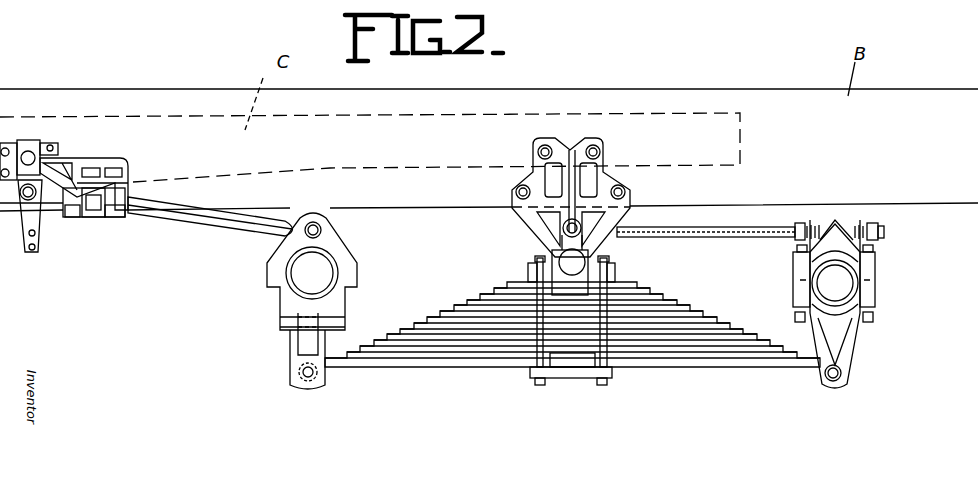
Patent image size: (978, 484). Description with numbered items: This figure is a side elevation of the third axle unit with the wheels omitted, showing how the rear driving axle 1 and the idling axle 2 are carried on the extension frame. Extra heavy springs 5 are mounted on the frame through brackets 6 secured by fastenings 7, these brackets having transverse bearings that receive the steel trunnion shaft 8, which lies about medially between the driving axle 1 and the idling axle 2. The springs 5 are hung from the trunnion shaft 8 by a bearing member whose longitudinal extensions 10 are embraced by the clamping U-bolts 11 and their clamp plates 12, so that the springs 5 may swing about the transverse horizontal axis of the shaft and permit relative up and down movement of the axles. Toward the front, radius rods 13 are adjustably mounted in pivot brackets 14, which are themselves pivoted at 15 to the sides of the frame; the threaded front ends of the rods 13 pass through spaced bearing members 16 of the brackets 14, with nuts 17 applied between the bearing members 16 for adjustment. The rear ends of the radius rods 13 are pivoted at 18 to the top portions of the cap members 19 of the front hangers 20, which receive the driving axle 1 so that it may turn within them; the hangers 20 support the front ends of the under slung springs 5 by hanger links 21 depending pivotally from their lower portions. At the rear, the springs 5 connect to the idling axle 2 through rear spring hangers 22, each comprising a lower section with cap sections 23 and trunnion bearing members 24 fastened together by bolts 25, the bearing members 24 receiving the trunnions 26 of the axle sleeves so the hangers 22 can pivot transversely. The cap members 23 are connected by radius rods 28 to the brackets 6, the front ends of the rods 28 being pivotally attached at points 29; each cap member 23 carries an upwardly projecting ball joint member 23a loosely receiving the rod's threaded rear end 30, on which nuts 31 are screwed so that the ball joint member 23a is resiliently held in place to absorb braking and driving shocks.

The driving axle 1 is at (310, 275).
The idling axle 2 is at (838, 283).
The springs 5 is at (456, 360).
The brackets 6 is at (600, 162).
The fastenings 7 is at (591, 150).
The trunnion shaft 8 is at (570, 262).
The longitudinal extensions 10 is at (528, 273).
The clamping U-bolts 11 is at (538, 358).
The clamp plates 12 is at (577, 378).
The radius rods 13 is at (197, 215).
The pivot brackets 14 is at (88, 158).
The pivot 15 is at (29, 152).
The bearing members 16 is at (70, 222).
The nuts 17 is at (93, 203).
The pivot 18 is at (314, 222).
The cap members 19 is at (333, 243).
The front hangers 20 is at (345, 300).
The hanger links 21 is at (292, 360).
The rear spring hangers 22 is at (855, 338).
The cap sections 23 is at (877, 252).
The ball joint member 23a is at (835, 222).
The trunnion bearing members 24 is at (808, 264).
The bolts 25 is at (798, 317).
The trunnions 26 is at (807, 285).
The radius rods 28 is at (733, 225).
The pivot points 29 is at (581, 233).
The threaded portion 30 is at (882, 230).
The nuts 31 is at (800, 223).